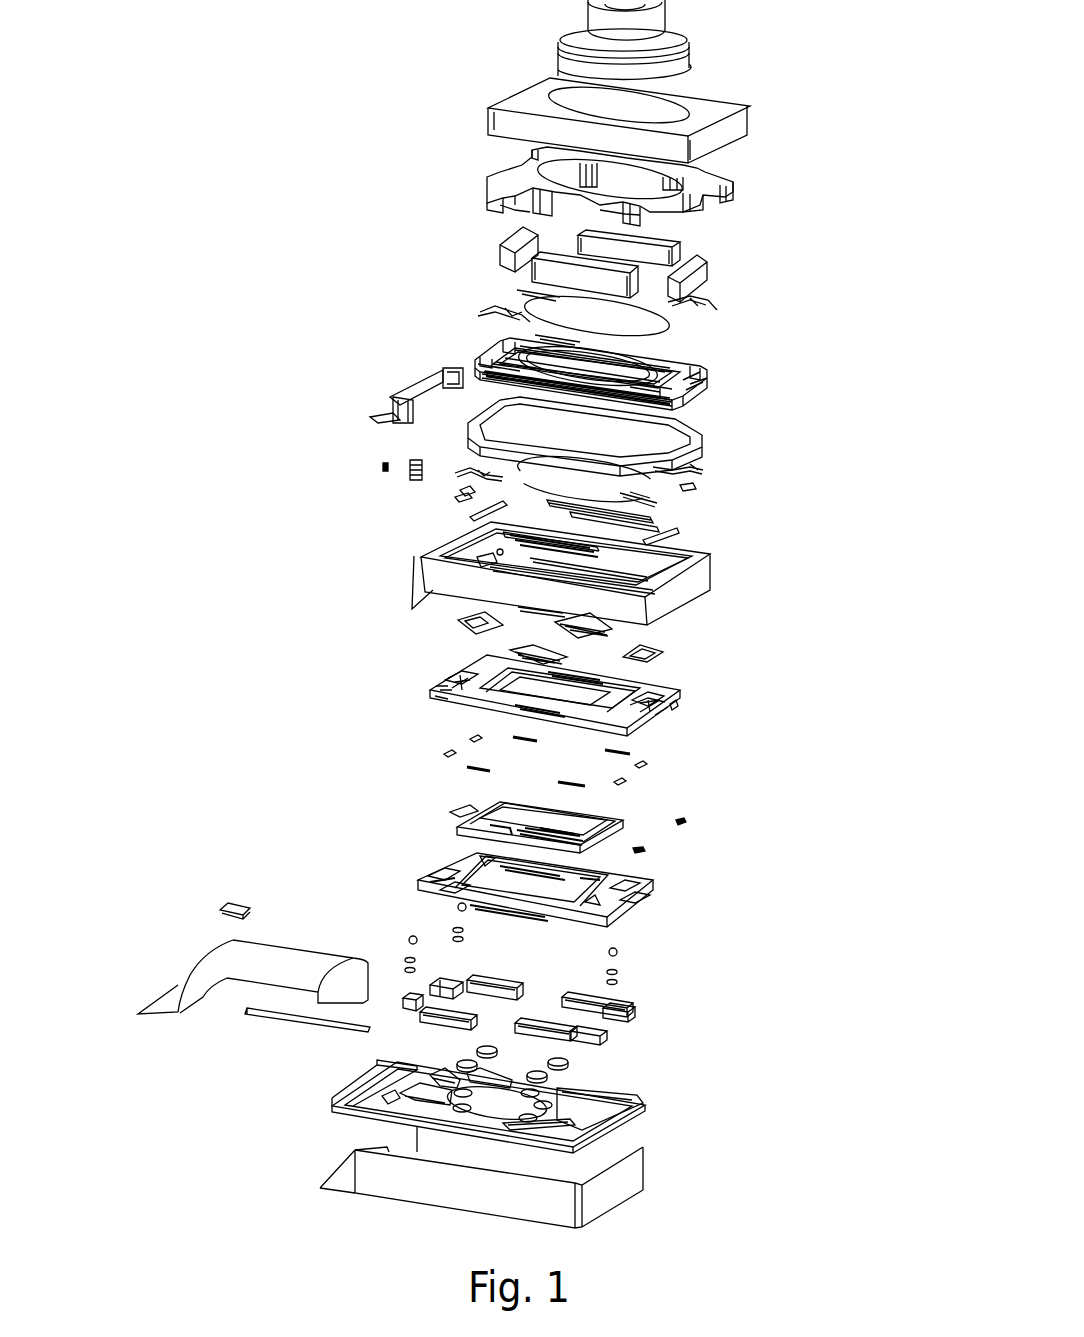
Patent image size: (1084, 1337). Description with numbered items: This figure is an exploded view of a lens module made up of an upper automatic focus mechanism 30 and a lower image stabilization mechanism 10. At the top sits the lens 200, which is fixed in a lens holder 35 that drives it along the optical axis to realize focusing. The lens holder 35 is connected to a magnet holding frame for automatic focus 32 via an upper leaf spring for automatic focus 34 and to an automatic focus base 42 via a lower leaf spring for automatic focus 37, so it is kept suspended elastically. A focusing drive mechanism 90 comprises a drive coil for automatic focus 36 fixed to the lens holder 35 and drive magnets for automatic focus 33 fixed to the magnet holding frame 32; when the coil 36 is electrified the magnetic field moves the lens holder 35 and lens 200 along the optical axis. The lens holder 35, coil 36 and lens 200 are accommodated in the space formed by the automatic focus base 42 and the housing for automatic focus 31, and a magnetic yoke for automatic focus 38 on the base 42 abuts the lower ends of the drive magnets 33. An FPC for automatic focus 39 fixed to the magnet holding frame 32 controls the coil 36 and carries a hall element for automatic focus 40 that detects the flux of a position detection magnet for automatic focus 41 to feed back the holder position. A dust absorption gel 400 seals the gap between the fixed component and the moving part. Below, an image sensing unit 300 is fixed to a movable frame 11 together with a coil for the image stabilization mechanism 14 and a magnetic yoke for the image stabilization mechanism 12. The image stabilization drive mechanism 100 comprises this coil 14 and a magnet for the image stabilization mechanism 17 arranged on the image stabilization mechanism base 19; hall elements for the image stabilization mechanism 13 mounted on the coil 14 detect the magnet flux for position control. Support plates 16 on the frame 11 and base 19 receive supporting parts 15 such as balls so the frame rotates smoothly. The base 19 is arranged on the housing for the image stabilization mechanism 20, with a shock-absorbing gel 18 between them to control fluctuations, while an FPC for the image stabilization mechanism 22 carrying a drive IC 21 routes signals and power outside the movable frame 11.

The lens 200 is at (653, 40).
The housing for automatic focus 31 is at (705, 104).
The magnet holding frame for automatic focus 32 is at (715, 177).
The drive magnet for automatic focus 33 is at (703, 260).
The upper leaf spring for automatic focus 34 is at (713, 308).
The lens holder 35 is at (705, 362).
The drive coil for automatic focus 36 is at (700, 415).
The lower leaf spring for automatic focus 37 is at (703, 463).
The dust absorption gel 400 is at (697, 485).
The magnetic yoke for automatic focus 38 is at (665, 517).
The automatic focus base 42 is at (707, 572).
The movable frame 11 is at (678, 687).
The magnetic yoke for image stabilization mechanism 12 is at (655, 760).
The image sensing unit 300 is at (628, 818).
The hall element for image stabilization mechanism 13 is at (647, 852).
The coil for image stabilization mechanism 14 is at (653, 880).
The supporting part 15 is at (620, 950).
The support plate 16 is at (622, 972).
The magnet for image stabilization mechanism 17 is at (640, 1007).
The shock-absorbing gel 18 is at (567, 1063).
The image stabilization mechanism base 19 is at (632, 1102).
The housing for image stabilization mechanism 20 is at (628, 1177).
The drive IC 21 is at (218, 912).
The FPC for image stabilization mechanism 22 is at (170, 1002).
The FPC for automatic focus 39 is at (392, 402).
The hall element for automatic focus 40 is at (382, 466).
The position detection magnet for automatic focus 41 is at (410, 480).
The automatic focus mechanism 30 is at (428, 246).
The image stabilization mechanism 10 is at (379, 878).
The focusing drive mechanism 90 is at (923, 543).
The image stabilization drive mechanism 100 is at (907, 873).